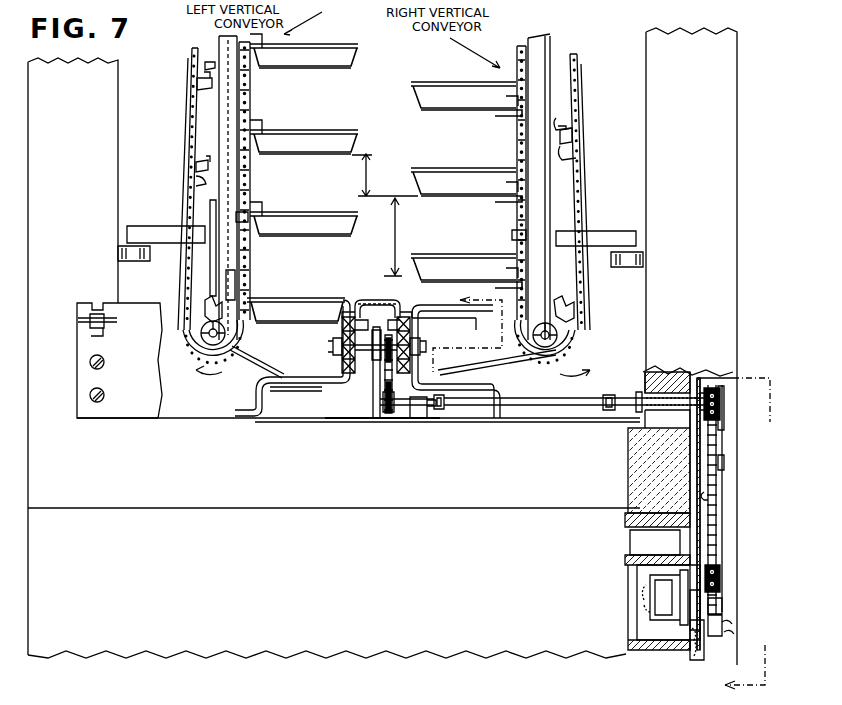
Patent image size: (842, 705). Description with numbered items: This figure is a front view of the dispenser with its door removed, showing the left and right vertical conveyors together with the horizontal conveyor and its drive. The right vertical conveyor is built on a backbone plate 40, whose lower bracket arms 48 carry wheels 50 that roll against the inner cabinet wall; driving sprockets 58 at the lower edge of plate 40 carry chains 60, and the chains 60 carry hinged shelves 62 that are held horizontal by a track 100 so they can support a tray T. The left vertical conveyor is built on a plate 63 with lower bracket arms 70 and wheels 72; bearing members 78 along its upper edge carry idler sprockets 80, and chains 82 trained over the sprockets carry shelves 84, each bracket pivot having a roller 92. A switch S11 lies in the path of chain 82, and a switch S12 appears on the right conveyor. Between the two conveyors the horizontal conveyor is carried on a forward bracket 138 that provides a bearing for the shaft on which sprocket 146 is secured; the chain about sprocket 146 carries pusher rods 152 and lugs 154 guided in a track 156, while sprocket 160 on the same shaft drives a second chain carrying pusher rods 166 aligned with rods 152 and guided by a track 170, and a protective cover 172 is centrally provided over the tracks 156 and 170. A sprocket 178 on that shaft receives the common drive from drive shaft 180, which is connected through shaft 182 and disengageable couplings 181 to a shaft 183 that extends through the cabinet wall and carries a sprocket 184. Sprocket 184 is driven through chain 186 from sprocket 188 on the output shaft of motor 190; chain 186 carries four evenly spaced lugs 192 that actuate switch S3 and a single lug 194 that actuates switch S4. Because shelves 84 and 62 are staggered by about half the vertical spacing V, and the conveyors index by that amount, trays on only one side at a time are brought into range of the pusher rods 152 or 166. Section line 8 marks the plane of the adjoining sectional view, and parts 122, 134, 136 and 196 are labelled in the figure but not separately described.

The section line 8- 8 is at (601, 489).
The plate 40 is at (552, 64).
The bracket arms 48 is at (598, 232).
The wheels 50 is at (612, 262).
The driving sprockets 58 is at (580, 312).
The chains 60 is at (578, 80).
The shelves 62 is at (462, 110).
The plate 63 is at (215, 120).
The bracket arms 70 is at (160, 226).
The wheels 72 is at (133, 258).
The bearing members 78 is at (240, 290).
The idler sprockets 80 is at (205, 310).
The chains 82 is at (250, 108).
The shelves 84 is at (288, 157).
The roller 92 is at (192, 82).
The track 100 is at (530, 46).
The left lower sprocket 122 is at (208, 347).
The right lower sprocket 134 is at (572, 326).
The valve block 136 is at (100, 305).
The forward bracket 138 is at (372, 414).
The sprocket 146 is at (340, 330).
The pusher rods 152 is at (284, 300).
The lugs 154 is at (360, 373).
The track 156 is at (380, 312).
The sprocket 160 is at (410, 325).
The pusher rods 166 is at (476, 320).
The track 170 is at (376, 326).
The protective cover 172 is at (390, 305).
The sprocket 178 is at (384, 370).
The drive shaft 180 is at (406, 410).
The disengageable couplings 181 is at (446, 408).
The shaft 182 is at (565, 417).
The shaft 183 is at (630, 400).
The sprocket 184 is at (720, 416).
The chain 186 is at (718, 482).
The sprocket 188 is at (395, 408).
The motor 190 is at (650, 620).
The lugs 192 is at (722, 390).
The lug 194 is at (718, 504).
The conveyor drive chains 196 is at (322, 374).
The tray T is at (336, 46).
The vertical spacing V is at (385, 215).
The switch S11 is at (247, 216).
The switch S12 is at (516, 236).
The switch S3 is at (722, 618).
The switch S4 is at (690, 628).